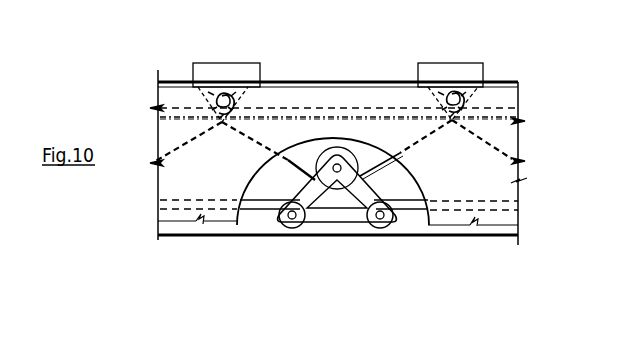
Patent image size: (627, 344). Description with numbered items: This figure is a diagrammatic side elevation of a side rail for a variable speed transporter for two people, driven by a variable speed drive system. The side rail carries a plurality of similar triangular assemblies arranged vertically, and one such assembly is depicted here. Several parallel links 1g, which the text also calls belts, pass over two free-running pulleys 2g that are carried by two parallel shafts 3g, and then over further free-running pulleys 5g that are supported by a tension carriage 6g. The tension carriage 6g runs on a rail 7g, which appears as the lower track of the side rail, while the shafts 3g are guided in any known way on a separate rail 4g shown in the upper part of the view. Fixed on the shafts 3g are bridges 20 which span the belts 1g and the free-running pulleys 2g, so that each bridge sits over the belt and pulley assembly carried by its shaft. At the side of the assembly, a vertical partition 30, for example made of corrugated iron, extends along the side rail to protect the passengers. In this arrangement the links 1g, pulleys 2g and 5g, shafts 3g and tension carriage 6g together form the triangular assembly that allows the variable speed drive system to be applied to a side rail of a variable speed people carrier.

The parallel links 1g is at (333, 82).
The free-running pulleys 2g is at (205, 88).
The parallel shafts 3g is at (238, 90).
The bridges 20 is at (227, 73).
The vertical partition 30 is at (500, 103).
The rail 4g is at (485, 116).
The free-running pulleys 5g is at (340, 157).
The tension carriage 6g is at (357, 189).
The rail 7g is at (497, 228).